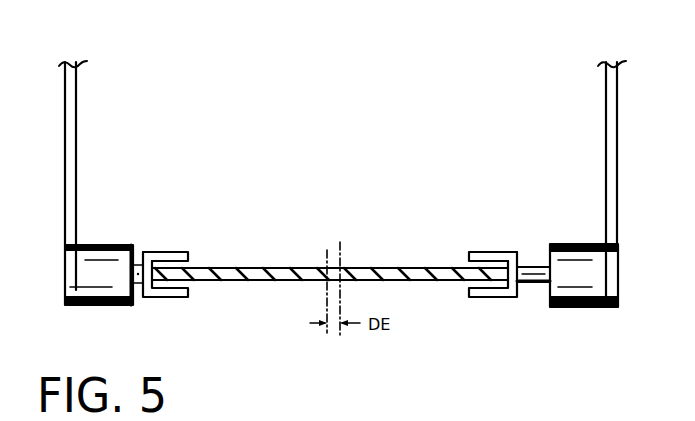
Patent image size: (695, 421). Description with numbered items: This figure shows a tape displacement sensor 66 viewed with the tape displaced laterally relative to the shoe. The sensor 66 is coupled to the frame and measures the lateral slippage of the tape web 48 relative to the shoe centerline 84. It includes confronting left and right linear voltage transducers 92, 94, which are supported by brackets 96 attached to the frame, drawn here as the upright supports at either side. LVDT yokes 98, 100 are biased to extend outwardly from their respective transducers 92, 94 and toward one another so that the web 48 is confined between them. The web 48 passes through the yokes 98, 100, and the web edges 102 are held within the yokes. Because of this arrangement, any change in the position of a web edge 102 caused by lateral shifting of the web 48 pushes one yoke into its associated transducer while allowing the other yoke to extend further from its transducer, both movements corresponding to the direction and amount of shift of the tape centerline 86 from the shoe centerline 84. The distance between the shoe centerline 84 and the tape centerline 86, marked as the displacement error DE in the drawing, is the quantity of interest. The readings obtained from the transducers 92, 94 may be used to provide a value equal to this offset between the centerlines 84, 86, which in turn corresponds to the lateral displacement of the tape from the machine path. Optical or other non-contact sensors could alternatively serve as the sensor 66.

The tape displacement sensor 66 is at (395, 92).
The brackets 96 is at (73, 153).
The left linear voltage transducer 92 is at (108, 258).
The right linear voltage transducer 94 is at (573, 250).
The web edges 102 is at (158, 260).
The left LVDT yoke 98 is at (188, 298).
The right LVDT yoke 100 is at (492, 298).
The tape web 48 is at (259, 268).
The shoe centerline 84 is at (342, 252).
The tape centerline 86 is at (322, 297).